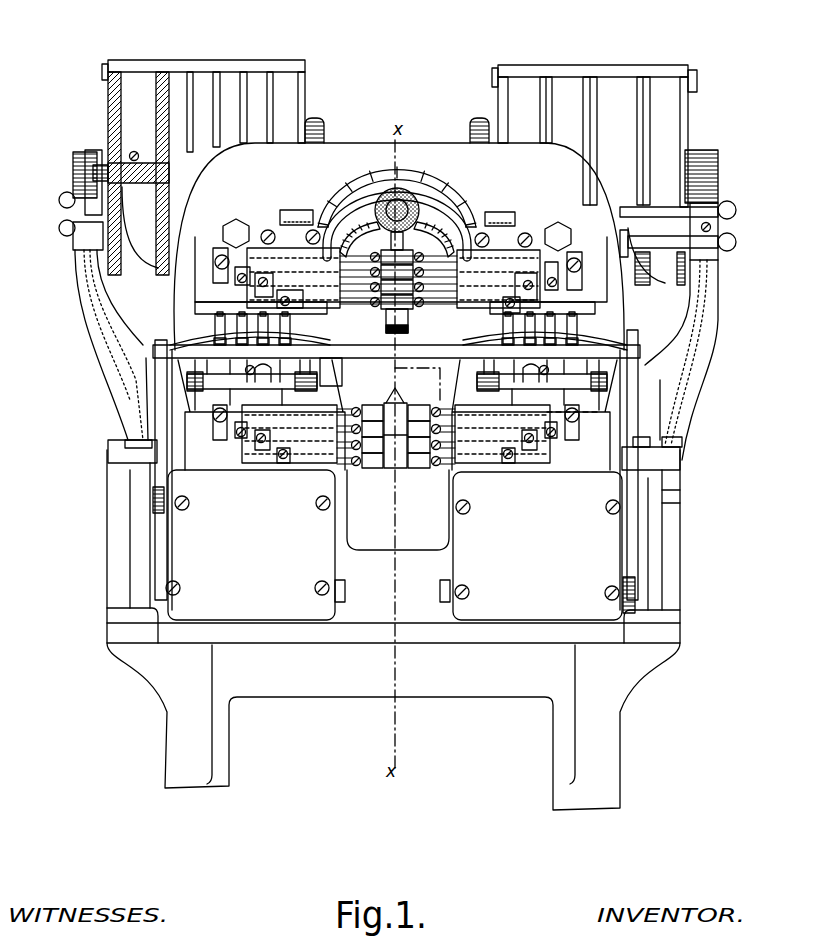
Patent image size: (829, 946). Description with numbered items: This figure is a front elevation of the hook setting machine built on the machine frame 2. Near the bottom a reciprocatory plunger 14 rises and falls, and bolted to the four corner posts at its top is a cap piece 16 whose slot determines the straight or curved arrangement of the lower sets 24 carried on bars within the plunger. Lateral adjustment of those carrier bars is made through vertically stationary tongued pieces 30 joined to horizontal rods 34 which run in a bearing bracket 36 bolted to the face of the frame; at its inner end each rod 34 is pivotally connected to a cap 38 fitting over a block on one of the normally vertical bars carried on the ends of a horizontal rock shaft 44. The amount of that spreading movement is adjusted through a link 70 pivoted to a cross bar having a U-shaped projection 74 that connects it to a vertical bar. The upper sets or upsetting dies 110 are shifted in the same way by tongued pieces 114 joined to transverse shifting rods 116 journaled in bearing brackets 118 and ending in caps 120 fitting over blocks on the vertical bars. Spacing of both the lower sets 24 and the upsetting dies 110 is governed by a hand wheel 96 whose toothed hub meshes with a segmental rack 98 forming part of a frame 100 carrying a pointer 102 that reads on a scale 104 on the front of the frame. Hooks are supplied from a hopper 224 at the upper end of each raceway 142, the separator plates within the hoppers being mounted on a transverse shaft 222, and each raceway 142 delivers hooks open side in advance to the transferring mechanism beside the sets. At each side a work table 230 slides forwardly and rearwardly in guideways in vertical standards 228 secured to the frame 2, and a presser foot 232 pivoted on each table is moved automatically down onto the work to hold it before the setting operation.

The machine frame 2 is at (668, 553).
The reciprocatory plunger 14 is at (620, 447).
The cap piece 16 is at (590, 412).
The lower set 24 is at (220, 393).
The tongued piece 30 is at (284, 455).
The horizontal rod 34 is at (528, 440).
The bearing bracket 36 is at (475, 435).
The cap 38 is at (415, 468).
The horizontal rock shaft 44 is at (392, 398).
The link 70 is at (335, 340).
The U-shaped projection 74 is at (390, 330).
The hand wheel 96 is at (377, 208).
The segmental rack 98 is at (423, 230).
The frame 100 is at (430, 197).
The pointer 102 is at (397, 188).
The scale 104 is at (353, 190).
The upsetting die 110 is at (218, 323).
The tongued piece 114 is at (576, 284).
The transverse shifting rod 116 is at (568, 247).
The bearing bracket 118 is at (487, 260).
The cap 120 is at (399, 309).
The raceway 142 is at (637, 237).
The transverse shaft 222 is at (110, 157).
The hopper 224 is at (130, 93).
The vertical standard 228 is at (633, 370).
The work table 230 is at (168, 353).
The presser foot 232 is at (160, 340).